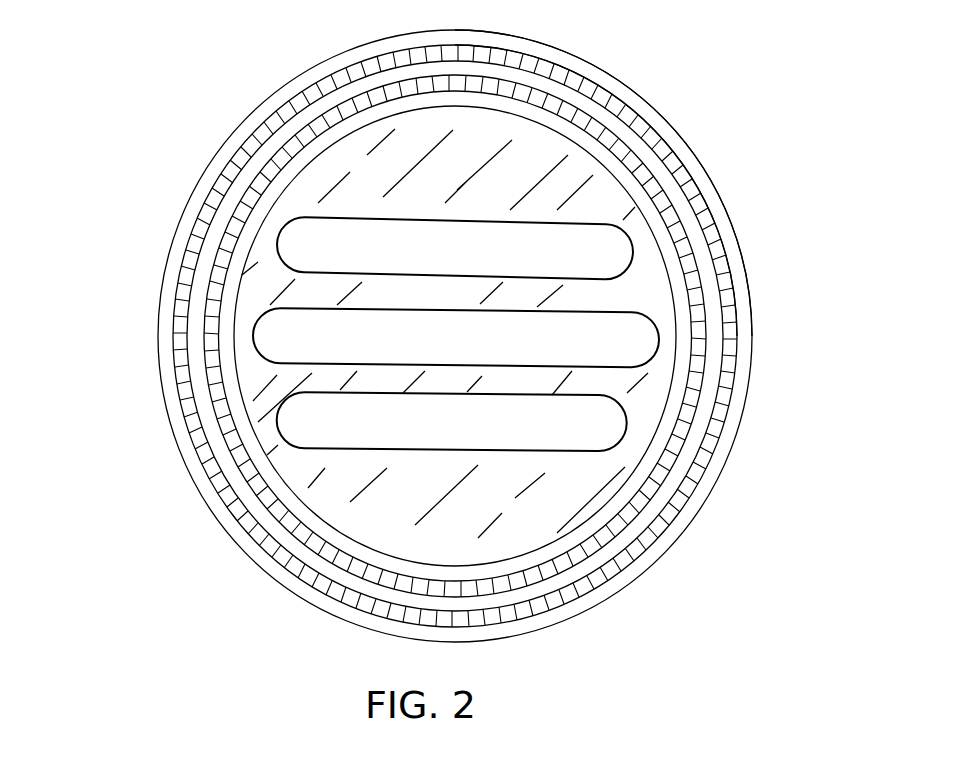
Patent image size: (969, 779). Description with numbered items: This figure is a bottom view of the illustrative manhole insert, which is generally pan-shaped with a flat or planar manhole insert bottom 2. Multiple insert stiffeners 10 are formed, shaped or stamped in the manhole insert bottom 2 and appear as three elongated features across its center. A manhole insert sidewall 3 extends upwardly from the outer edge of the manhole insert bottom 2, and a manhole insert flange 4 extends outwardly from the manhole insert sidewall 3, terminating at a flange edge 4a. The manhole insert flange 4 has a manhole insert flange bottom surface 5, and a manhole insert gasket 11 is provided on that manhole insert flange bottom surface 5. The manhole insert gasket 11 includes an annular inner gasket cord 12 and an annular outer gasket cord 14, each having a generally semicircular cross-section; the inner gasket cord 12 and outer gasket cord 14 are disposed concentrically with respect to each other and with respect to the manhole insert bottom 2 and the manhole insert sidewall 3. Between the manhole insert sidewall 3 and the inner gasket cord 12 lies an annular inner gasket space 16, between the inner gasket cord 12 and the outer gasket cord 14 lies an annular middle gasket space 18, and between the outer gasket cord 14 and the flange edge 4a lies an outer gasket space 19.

The manhole insert bottom 2 is at (532, 180).
The manhole insert sidewall 3 is at (667, 412).
The manhole insert flange 4 is at (697, 173).
The flange edge 4a is at (678, 135).
The manhole insert flange bottom surface 5 is at (727, 237).
The insert stiffeners 10 is at (434, 282).
The manhole insert gasket 11 is at (218, 158).
The inner gasket cord 12 is at (575, 110).
The outer gasket cord 14 is at (637, 117).
The inner gasket space 16 is at (645, 480).
The middle gasket space 18 is at (653, 523).
The outer gasket space 19 is at (702, 507).